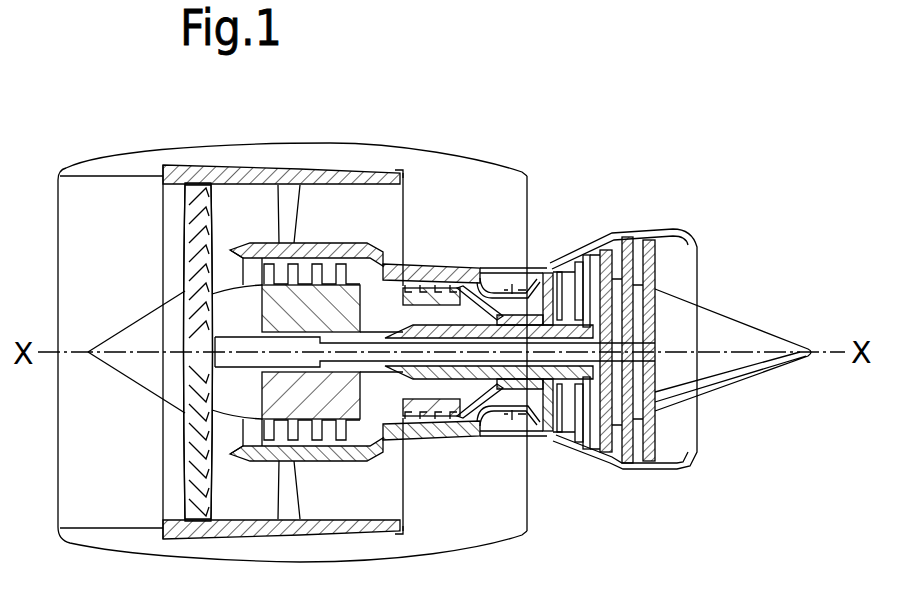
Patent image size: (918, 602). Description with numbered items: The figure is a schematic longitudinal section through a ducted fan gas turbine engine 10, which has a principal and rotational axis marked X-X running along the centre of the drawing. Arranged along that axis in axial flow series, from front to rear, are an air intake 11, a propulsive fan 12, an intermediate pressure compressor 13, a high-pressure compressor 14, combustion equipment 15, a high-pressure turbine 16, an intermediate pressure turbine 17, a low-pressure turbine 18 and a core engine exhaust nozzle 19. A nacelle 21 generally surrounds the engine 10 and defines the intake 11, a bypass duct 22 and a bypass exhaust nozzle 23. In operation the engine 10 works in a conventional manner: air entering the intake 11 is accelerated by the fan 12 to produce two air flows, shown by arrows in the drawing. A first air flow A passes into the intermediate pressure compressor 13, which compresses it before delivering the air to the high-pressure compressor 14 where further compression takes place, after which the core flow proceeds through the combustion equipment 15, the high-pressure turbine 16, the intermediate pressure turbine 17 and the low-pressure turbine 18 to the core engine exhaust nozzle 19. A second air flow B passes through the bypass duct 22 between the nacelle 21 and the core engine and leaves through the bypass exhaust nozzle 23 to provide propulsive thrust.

The ducted fan gas turbine engine 10 is at (134, 124).
The air intake 11 is at (108, 177).
The propulsive fan 12 is at (187, 473).
The intermediate pressure compressor 13 is at (320, 450).
The high-pressure compressor 14 is at (438, 286).
The combustion equipment 15 is at (487, 412).
The high-pressure turbine 16 is at (533, 433).
The intermediate pressure turbine 17 is at (573, 262).
The low-pressure turbine 18 is at (603, 458).
The core engine exhaust nozzle 19 is at (690, 232).
The nacelle 21 is at (292, 142).
The bypass duct 22 is at (495, 214).
The bypass exhaust nozzle 23 is at (523, 174).
The first air flow A is at (228, 268).
The second air flow B is at (245, 213).